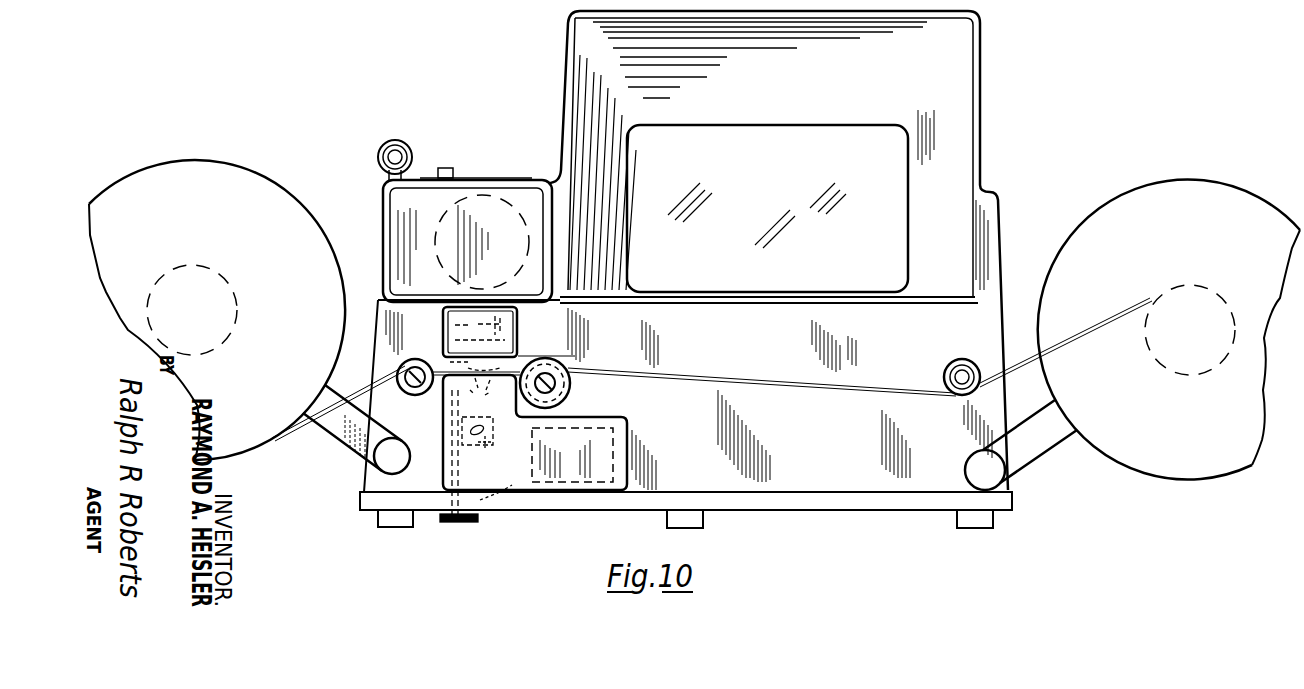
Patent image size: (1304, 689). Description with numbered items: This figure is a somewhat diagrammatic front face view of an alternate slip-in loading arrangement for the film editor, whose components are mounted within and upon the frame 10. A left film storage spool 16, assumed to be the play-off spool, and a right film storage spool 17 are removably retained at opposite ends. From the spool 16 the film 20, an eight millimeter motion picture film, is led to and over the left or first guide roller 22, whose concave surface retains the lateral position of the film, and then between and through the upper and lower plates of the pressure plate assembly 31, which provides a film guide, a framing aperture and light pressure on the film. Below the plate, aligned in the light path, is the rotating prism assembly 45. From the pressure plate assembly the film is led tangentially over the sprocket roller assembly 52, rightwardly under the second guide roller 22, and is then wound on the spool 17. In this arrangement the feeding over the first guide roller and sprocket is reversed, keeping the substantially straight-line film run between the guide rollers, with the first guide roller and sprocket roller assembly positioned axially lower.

The frame 10 is at (980, 25).
The film storage spool 16 is at (234, 180).
The film storage spool 17 is at (1062, 300).
The film 20 is at (322, 417).
The guide roller 22 is at (406, 366).
The pressure plate assembly 31 is at (567, 356).
The rotating prism assembly 45 is at (456, 438).
The sprocket roller assembly 52 is at (624, 362).